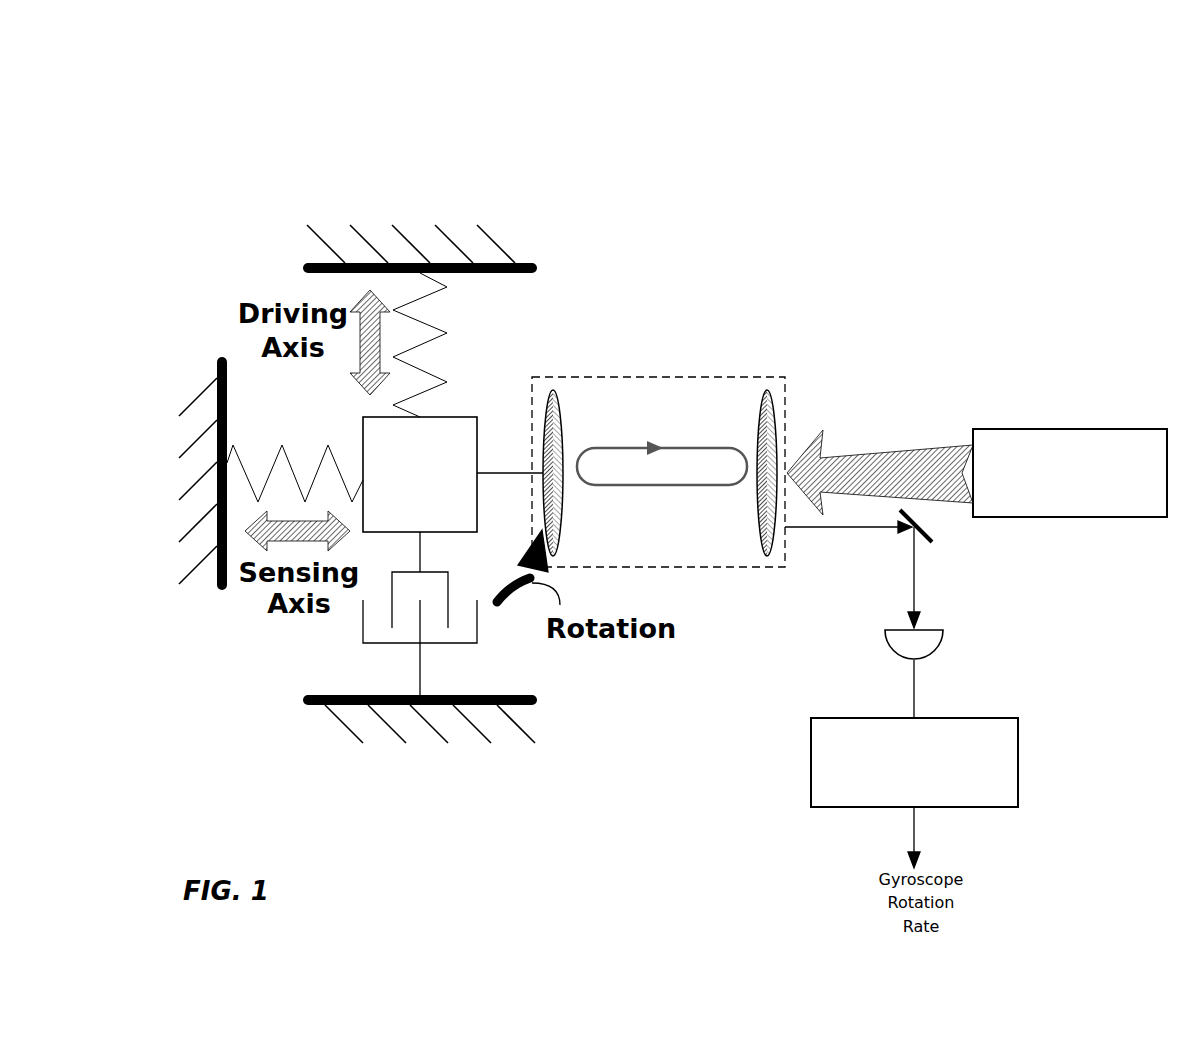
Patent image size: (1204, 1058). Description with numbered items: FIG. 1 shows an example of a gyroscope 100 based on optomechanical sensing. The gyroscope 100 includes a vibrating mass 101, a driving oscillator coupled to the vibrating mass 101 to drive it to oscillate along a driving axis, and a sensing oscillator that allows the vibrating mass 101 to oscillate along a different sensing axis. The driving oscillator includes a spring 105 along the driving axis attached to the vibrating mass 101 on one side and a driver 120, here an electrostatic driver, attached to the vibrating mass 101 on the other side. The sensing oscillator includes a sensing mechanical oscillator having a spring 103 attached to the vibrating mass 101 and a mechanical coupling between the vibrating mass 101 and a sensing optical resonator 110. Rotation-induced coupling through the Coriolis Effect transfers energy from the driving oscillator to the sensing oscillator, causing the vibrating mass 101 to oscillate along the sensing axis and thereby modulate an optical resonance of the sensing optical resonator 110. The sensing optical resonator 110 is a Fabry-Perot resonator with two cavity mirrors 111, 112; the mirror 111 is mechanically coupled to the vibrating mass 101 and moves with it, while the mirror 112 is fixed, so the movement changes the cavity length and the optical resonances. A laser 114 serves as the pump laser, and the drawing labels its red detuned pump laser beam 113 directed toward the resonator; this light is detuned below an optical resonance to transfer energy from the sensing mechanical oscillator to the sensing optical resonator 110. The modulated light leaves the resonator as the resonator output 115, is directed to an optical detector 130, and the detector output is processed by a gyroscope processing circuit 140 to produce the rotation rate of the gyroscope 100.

The gyroscope 100 is at (1048, 191).
The vibrating mass 101 is at (422, 514).
The spring 103 is at (295, 441).
The spring 105 is at (454, 345).
The sensing optical resonator 110 is at (670, 408).
The mirror 111 is at (588, 418).
The mirror 112 is at (803, 440).
The red detuned pump laser beam #1 113 is at (933, 427).
The laser 114 is at (1055, 496).
The resonator output 115 is at (884, 574).
The driver 120 is at (363, 628).
The optical detector 130 is at (976, 647).
The gyroscope processing circuit 140 is at (899, 797).